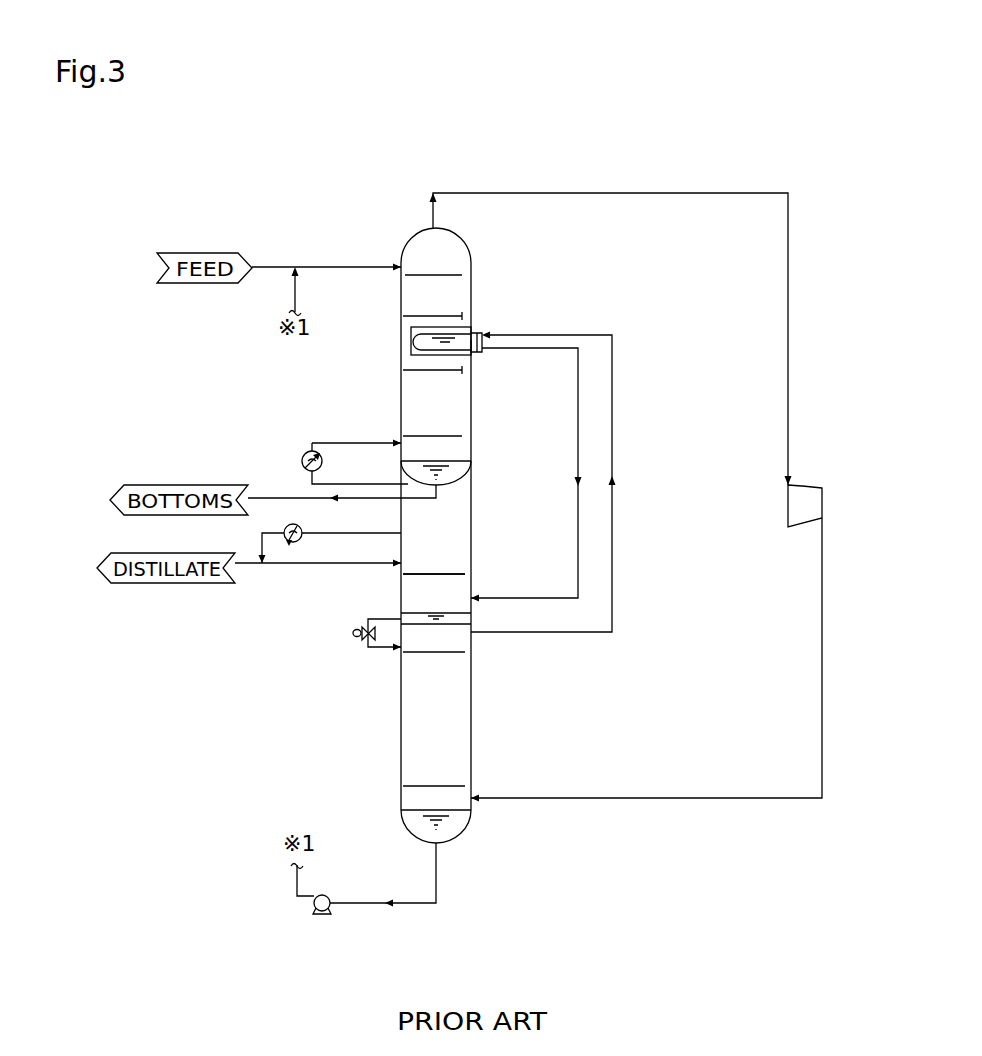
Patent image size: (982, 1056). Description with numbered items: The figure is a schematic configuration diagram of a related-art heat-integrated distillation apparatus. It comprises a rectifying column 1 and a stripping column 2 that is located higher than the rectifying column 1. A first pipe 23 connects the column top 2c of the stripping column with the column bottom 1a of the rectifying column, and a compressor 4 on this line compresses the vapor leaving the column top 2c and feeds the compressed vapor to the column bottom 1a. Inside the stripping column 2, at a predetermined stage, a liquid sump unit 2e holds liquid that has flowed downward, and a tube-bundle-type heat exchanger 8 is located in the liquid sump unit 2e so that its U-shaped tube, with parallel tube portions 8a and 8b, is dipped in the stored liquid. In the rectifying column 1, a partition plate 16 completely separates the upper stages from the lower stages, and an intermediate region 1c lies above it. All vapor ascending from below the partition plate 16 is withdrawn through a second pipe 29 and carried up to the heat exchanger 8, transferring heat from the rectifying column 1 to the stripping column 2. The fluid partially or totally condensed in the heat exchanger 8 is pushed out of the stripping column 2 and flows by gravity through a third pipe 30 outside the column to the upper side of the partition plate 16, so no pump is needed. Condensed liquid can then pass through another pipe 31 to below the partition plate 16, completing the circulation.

The rectifying column 1 is at (401, 690).
The column bottom of the rectifying column 1a is at (412, 796).
The column intermediate section 1c is at (455, 508).
The stripping column 2 is at (401, 392).
The column top of the stripping column 2c is at (452, 250).
The liquid sump unit 2e is at (415, 349).
The compressor 4 is at (806, 486).
The heat exchanger 8 is at (411, 333).
The parallel tube portion 8a is at (471, 350).
The parallel tube portion 8b is at (473, 333).
The partition plate 16 is at (458, 624).
The first pipe 23 is at (668, 193).
The second pipe 29 is at (612, 386).
The third pipe 30 is at (578, 505).
The pipe 31 is at (362, 620).